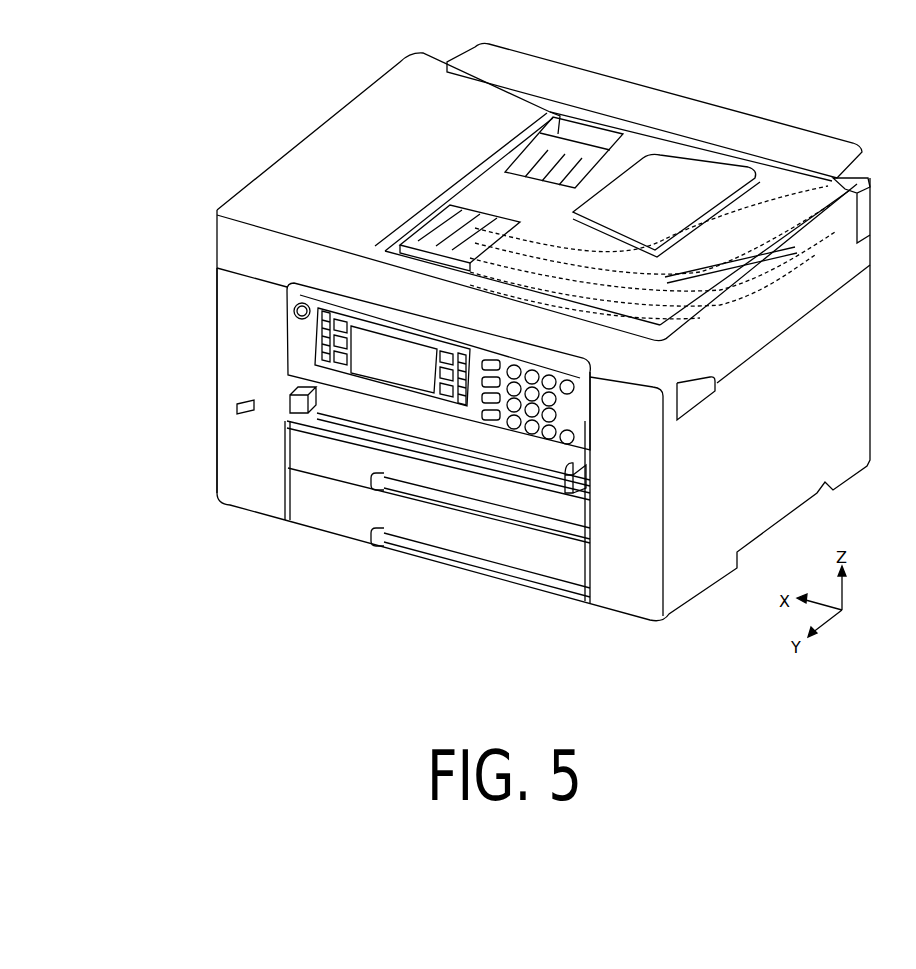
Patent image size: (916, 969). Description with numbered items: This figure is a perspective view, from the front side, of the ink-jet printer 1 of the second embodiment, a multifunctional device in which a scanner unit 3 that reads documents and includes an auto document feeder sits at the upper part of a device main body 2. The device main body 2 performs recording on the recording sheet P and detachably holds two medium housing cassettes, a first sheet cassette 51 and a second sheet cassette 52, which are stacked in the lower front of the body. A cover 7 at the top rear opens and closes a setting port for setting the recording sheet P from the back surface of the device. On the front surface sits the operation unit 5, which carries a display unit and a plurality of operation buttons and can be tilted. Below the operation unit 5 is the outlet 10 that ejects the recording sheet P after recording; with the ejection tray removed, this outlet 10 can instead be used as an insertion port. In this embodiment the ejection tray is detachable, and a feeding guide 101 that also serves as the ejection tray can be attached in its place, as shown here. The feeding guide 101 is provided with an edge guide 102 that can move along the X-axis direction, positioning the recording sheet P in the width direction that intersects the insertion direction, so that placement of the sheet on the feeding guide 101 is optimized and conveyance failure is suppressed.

The ink-jet printer 1 is at (738, 100).
The device main body 2 is at (216, 330).
The scanner unit 3 is at (287, 139).
The operation unit 5 is at (307, 342).
The cover 7 is at (787, 147).
The outlet 10 is at (463, 427).
The first sheet cassette 51 is at (343, 463).
The second sheet cassette 52 is at (360, 520).
The feeding guide 101 is at (424, 420).
The edge guide 102 is at (292, 388).